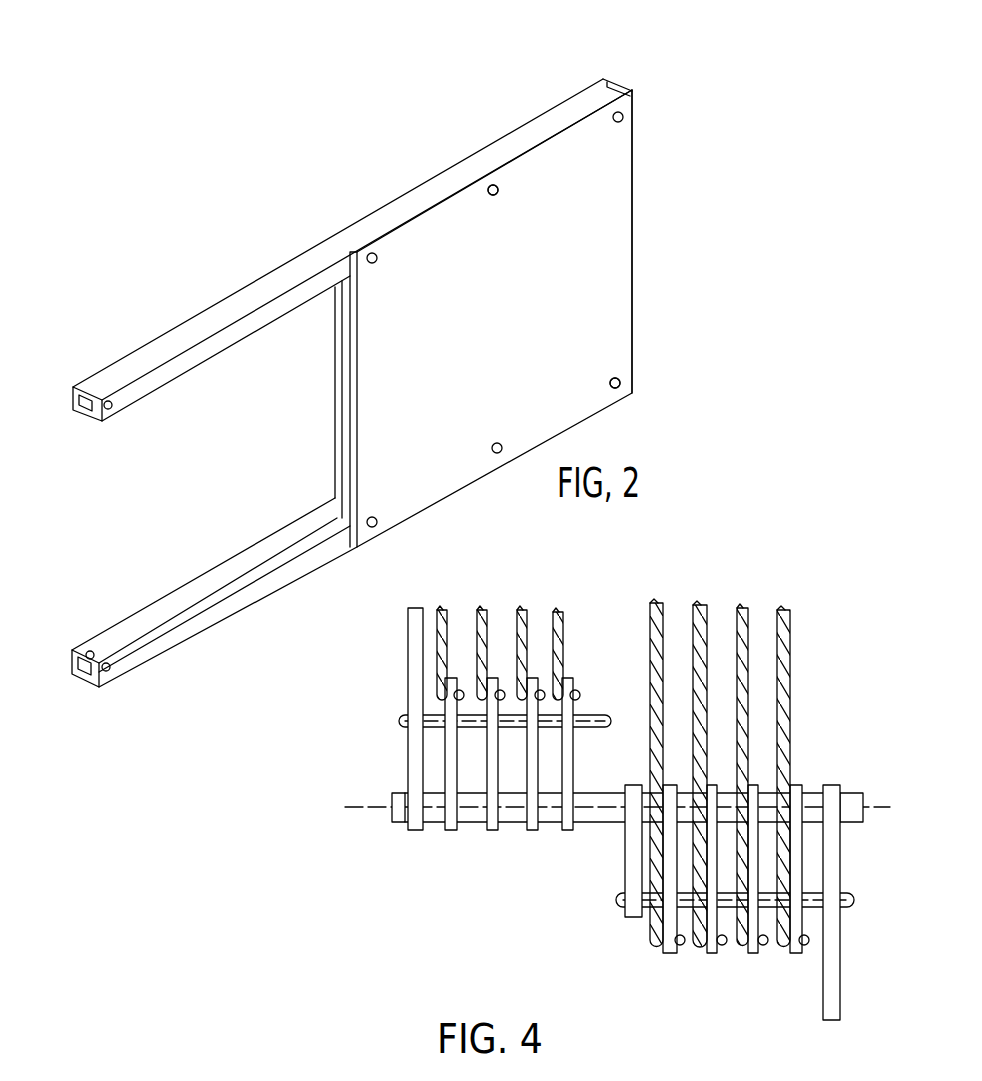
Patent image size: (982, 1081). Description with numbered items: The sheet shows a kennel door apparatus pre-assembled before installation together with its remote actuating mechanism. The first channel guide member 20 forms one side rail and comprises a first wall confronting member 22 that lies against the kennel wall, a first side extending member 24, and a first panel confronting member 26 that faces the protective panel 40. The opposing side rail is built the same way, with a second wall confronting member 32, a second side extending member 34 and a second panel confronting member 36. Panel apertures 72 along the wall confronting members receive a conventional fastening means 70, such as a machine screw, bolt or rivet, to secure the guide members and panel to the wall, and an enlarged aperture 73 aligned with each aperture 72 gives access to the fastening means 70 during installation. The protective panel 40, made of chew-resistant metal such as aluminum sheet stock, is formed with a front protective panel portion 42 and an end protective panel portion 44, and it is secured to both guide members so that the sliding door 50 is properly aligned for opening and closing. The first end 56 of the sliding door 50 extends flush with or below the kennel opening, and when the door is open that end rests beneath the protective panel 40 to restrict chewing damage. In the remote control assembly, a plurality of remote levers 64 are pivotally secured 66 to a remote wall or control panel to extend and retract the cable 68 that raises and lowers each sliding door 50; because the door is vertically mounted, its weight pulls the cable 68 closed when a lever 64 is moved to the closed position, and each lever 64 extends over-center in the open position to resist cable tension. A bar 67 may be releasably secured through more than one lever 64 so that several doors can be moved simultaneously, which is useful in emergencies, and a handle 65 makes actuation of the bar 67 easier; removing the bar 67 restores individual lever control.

In FIG. 2, the first channel guide member 20 is at (262, 255).
In FIG. 2, the first wall confronting member 22 is at (72, 398).
In FIG. 2, the first side extending member 24 is at (196, 330).
In FIG. 2, the first panel confronting member 26 is at (195, 360).
In FIG. 2, the second wall confronting member 32 is at (67, 675).
In FIG. 2, the second side extending member 34 is at (82, 683).
In FIG. 2, the second panel confronting member 36 is at (102, 678).
In FIG. 2, the protective panel 40 is at (563, 182).
In FIG. 2, the front protective panel portion 42 is at (596, 272).
In FIG. 2, the end protective panel portion 44 is at (620, 80).
In FIG. 2, the sliding door 50 is at (290, 399).
In FIG. 2, the first end 56 is at (338, 450).
In FIG. 2, the fastening means 70 is at (490, 185).
In FIG. 2, the panel aperture 72 is at (90, 655).
In FIG. 2, the enlarged aperture 73 is at (108, 401).
In FIG. 4, the remote lever 64 is at (560, 770).
In FIG. 4, the handle 65 is at (408, 650).
In FIG. 4, the pivotal securement 66 is at (392, 812).
In FIG. 4, the bar 67 is at (578, 716).
In FIG. 4, the cable 68 is at (558, 614).